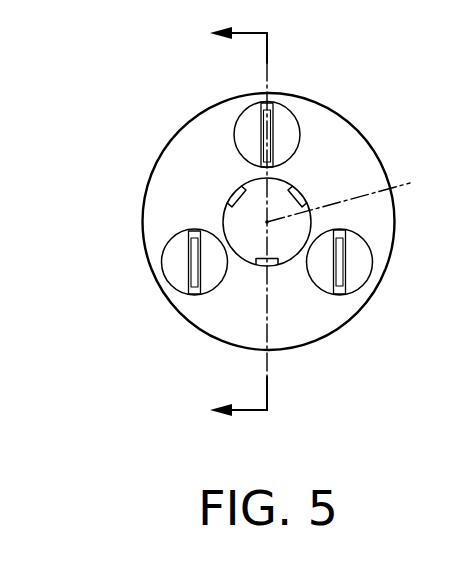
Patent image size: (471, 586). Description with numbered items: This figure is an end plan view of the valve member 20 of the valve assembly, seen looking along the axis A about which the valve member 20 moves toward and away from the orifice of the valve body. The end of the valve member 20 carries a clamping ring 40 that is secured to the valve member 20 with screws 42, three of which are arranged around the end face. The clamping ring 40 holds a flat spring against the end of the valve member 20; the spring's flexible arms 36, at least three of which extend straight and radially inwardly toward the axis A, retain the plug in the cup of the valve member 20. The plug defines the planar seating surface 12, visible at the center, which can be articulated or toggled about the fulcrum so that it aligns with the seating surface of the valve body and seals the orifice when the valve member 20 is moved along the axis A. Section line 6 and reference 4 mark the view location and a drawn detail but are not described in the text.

The fastener 4 is at (170, 277).
The section line 6- 6 is at (227, 222).
The seating surface 12 is at (311, 218).
The valve member 20 is at (138, 180).
The flexible arms 36 is at (247, 192).
The clamping ring 40 is at (222, 320).
The screws 42 is at (283, 120).
The axis A is at (351, 196).